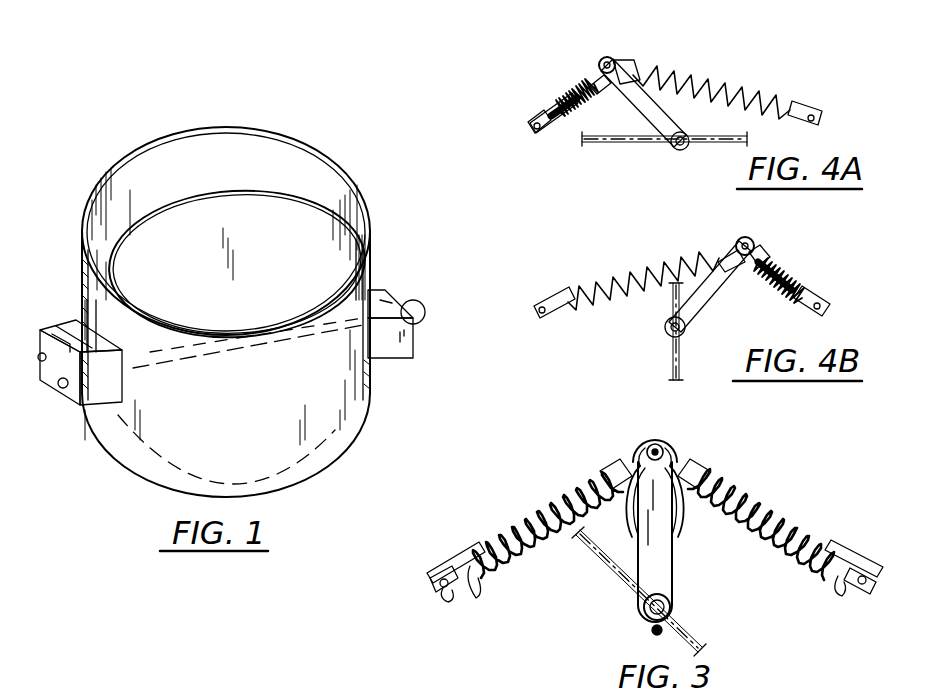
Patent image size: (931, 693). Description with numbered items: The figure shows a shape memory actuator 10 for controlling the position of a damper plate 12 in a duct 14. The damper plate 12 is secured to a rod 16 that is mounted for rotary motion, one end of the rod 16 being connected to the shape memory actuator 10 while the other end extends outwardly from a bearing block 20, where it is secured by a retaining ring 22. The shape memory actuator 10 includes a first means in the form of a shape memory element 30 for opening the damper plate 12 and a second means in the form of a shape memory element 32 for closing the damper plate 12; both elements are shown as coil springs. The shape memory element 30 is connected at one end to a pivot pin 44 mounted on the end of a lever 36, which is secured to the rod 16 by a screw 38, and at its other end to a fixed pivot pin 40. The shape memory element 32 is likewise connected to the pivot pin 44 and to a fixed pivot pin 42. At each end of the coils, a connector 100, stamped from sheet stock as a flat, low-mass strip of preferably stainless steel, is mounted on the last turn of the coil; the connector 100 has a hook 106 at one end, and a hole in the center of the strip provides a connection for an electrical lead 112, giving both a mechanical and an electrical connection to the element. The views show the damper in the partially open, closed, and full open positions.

In FIG. 1, the shape memory actuator 10 is at (82, 420).
In FIG. 4A, the shape memory actuator 10 is at (800, 62).
In FIG. 4B, the shape memory actuator 10 is at (780, 252).
In FIG. 3, the shape memory actuator 10 is at (758, 465).
In FIG. 1, the damper plate 12 is at (306, 190).
In FIG. 4A, the damper plate 12 is at (618, 150).
In FIG. 4B, the damper plate 12 is at (668, 366).
In FIG. 3, the damper plate 12 is at (583, 552).
In FIG. 1, the duct 14 is at (362, 190).
In FIG. 1, the rod 16 is at (249, 353).
In FIG. 4A, the rod 16 is at (678, 150).
In FIG. 4B, the rod 16 is at (664, 329).
In FIG. 3, the rod 16 is at (649, 622).
In FIG. 1, the bearing block 20 is at (402, 341).
In FIG. 1, the retaining ring 22 is at (420, 302).
In FIG. 4A, the shape memory element 30 is at (574, 84).
In FIG. 4B, the shape memory element 30 is at (678, 250).
In FIG. 3, the shape memory element 30 is at (567, 500).
In FIG. 4A, the shape memory element 32 is at (668, 78).
In FIG. 4B, the shape memory element 32 is at (792, 274).
In FIG. 3, the shape memory element 32 is at (768, 521).
In FIG. 1, the lever 36 is at (82, 326).
In FIG. 4A, the lever 36 is at (633, 108).
In FIG. 4B, the lever 36 is at (703, 306).
In FIG. 3, the lever 36 is at (676, 580).
In FIG. 3, the screw 38 is at (648, 635).
In FIG. 4A, the fixed pivot pin 40 is at (549, 126).
In FIG. 4B, the fixed pivot pin 40 is at (546, 316).
In FIG. 3, the fixed pivot pin 40 is at (432, 581).
In FIG. 4A, the fixed pivot pin 42 is at (806, 126).
In FIG. 4B, the fixed pivot pin 42 is at (810, 316).
In FIG. 3, the fixed pivot pin 42 is at (860, 572).
In FIG. 4A, the pivot pin 44 is at (607, 56).
In FIG. 4B, the pivot pin 44 is at (748, 232).
In FIG. 3, the pivot pin 44 is at (655, 436).
In FIG. 3, the connector 100 is at (619, 460).
In FIG. 3, the hook 106 is at (445, 596).
In FIG. 3, the electrical lead 112 is at (477, 602).